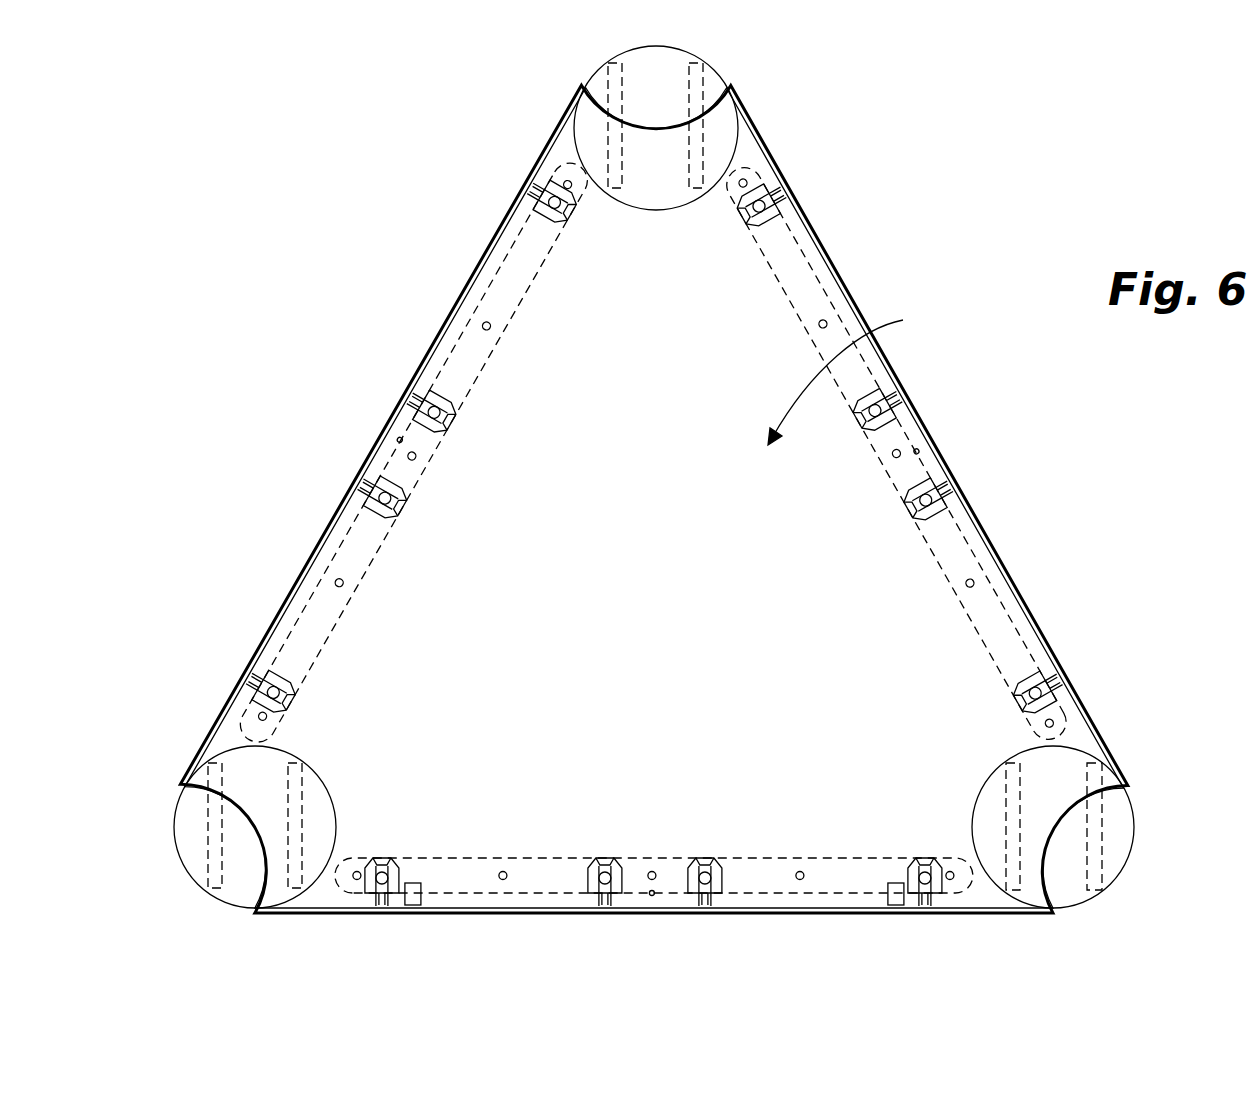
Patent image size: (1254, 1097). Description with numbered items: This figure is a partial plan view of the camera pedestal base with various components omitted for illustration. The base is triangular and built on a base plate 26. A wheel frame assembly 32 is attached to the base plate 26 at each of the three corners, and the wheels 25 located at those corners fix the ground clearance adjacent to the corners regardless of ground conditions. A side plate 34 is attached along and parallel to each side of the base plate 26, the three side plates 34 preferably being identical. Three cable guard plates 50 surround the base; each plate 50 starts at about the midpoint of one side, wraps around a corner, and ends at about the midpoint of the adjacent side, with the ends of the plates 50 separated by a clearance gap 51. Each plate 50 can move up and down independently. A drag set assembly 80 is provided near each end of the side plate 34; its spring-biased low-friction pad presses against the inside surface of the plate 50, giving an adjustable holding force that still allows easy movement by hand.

The wheels 25 is at (703, 118).
The base plate 26 is at (853, 375).
The wheel frame assembly 32 is at (579, 113).
The side plate 34 is at (482, 341).
The cable guard plate 50 is at (404, 398).
The clearance gap 51 is at (376, 433).
The drag set assembly 80 is at (424, 880).